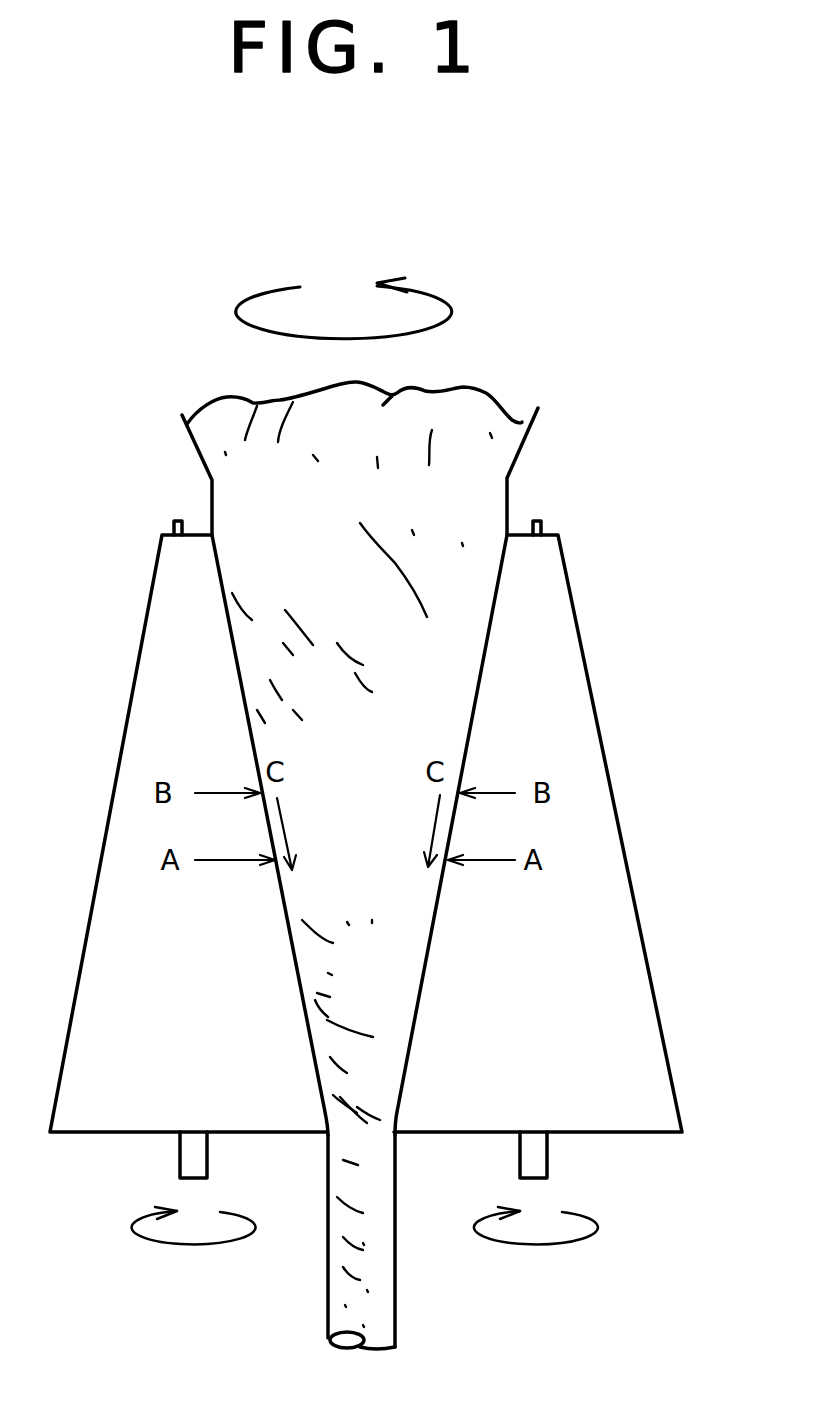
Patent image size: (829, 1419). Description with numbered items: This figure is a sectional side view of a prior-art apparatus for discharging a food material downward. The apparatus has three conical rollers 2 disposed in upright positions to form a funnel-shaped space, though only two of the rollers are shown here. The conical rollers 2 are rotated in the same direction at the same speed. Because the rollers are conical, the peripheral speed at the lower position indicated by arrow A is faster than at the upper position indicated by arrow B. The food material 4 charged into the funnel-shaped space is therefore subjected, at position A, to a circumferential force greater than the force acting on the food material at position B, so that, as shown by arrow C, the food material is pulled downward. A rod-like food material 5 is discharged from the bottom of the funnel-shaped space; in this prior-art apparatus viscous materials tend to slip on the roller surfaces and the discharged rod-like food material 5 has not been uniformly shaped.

The conical roller 2 is at (605, 760).
The food material 4 is at (485, 394).
The rod-like food material 5 is at (328, 1307).